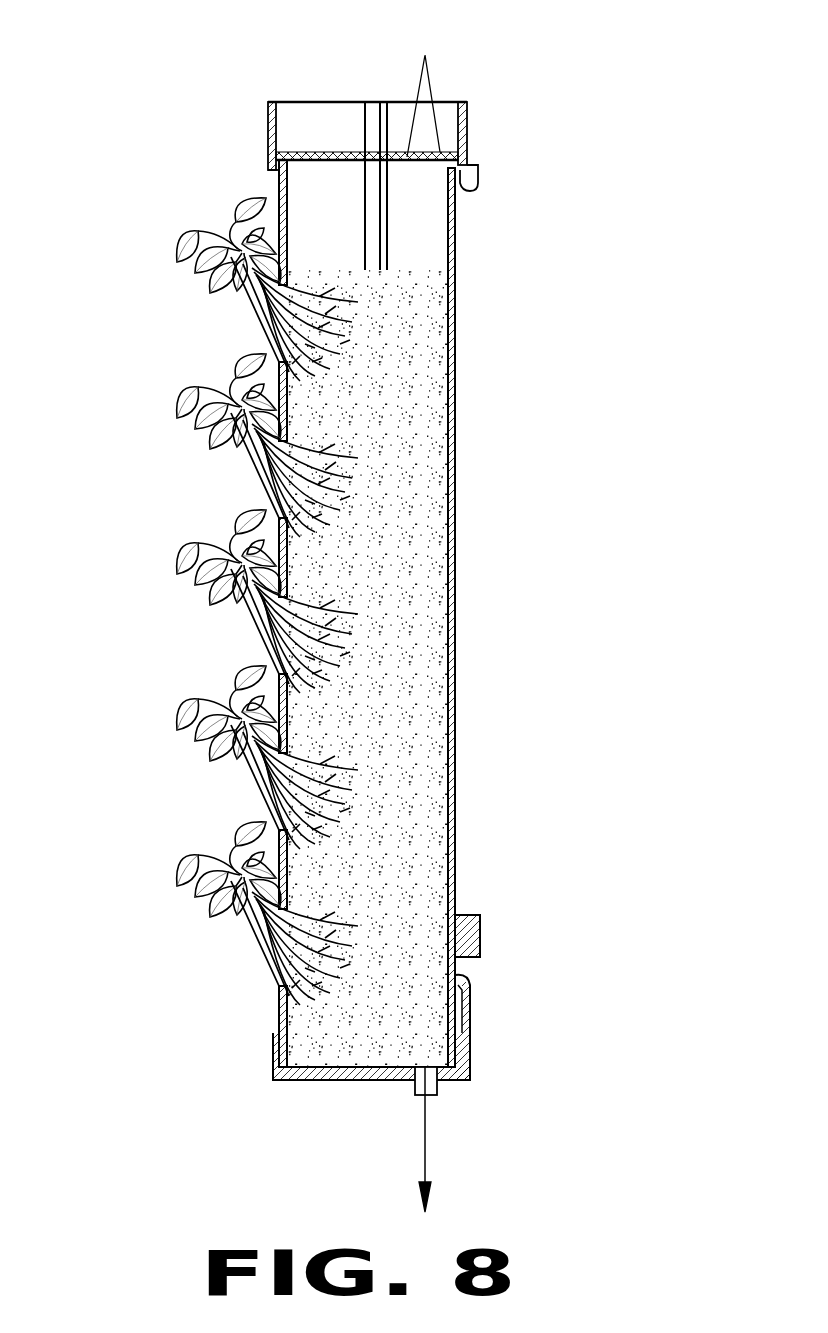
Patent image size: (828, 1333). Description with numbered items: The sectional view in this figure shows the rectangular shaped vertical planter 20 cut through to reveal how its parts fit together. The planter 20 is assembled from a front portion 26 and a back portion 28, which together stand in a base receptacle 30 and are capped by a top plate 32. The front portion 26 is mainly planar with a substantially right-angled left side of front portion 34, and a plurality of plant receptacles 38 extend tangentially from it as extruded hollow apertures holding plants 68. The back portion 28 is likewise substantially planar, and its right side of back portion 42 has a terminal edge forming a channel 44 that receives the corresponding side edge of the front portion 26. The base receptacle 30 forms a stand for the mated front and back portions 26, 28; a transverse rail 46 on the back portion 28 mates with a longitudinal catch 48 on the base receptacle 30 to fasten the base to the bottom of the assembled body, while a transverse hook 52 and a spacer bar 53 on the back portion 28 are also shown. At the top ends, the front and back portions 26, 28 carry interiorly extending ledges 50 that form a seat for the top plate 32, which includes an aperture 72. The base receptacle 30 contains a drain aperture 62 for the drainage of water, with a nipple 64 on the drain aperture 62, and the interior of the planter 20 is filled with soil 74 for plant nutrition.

The vertical planter 20 is at (365, 608).
The front portion 26 is at (262, 1012).
The back portion 28 is at (470, 392).
The base receptacle 30 is at (297, 1112).
The top plate 32 is at (315, 158).
The left side of front portion 34 is at (356, 112).
The plant receptacle 38 is at (243, 463).
The right side of back portion 42 is at (432, 252).
The channel 44 is at (385, 230).
The transverse rail 46 is at (472, 990).
The longitudinal catch 48 is at (470, 1018).
The ledge 50 is at (283, 180).
The transverse hook 52 is at (480, 170).
The spacer bar 53 is at (482, 917).
The drain aperture 62 is at (437, 1070).
The nipple 64 is at (437, 1097).
The plant 68 is at (178, 697).
The aperture 72 is at (422, 81).
The soil 74 is at (425, 645).